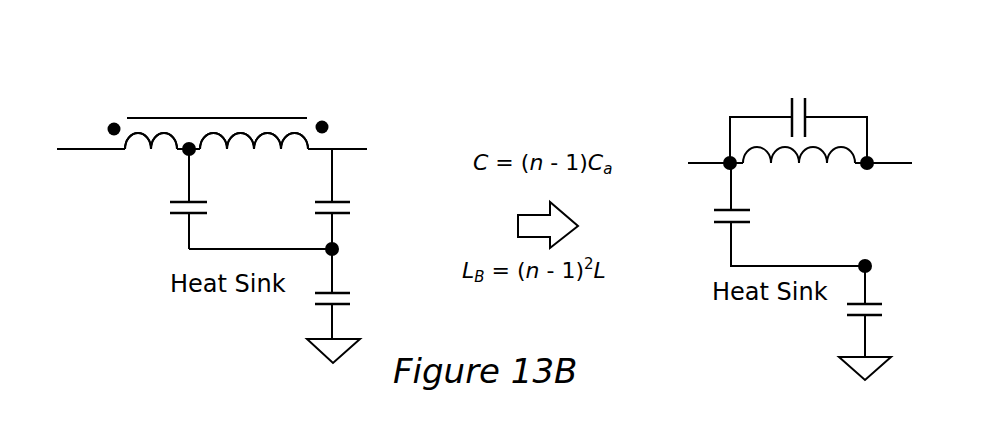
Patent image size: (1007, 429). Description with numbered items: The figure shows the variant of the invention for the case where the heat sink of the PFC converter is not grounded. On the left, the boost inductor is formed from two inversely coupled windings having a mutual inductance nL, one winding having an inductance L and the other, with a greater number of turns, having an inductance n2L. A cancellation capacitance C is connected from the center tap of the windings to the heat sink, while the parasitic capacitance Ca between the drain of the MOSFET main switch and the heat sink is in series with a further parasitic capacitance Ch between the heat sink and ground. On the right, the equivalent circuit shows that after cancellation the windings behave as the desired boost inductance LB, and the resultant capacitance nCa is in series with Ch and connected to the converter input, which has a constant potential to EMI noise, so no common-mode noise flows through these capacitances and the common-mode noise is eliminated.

The mutual inductance nL is at (275, 98).
The winding inductance L is at (151, 167).
The second winding inductance n2L is at (254, 168).
The cancellation capacitance C is at (174, 223).
The parasitic capacitance Ca is at (352, 202).
The heat sink parasitic capacitance Ch is at (618, 300).
The boost inductance LB is at (799, 180).
The resultant capacitance nCa is at (857, 48).